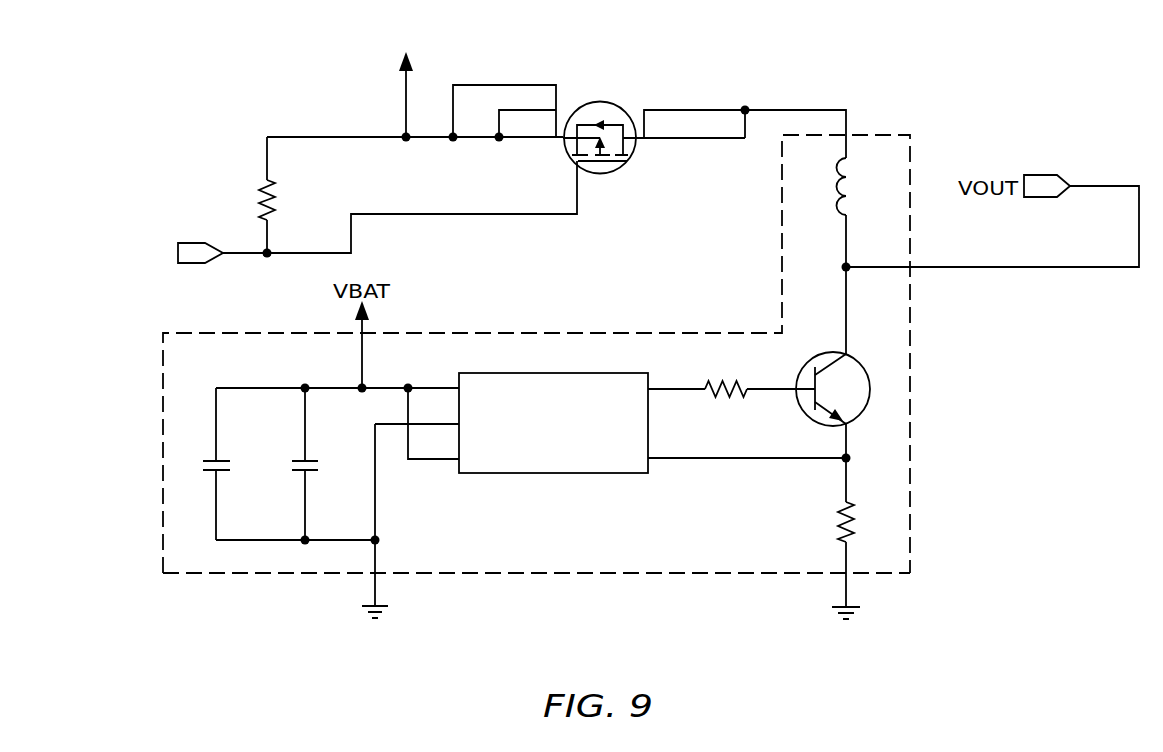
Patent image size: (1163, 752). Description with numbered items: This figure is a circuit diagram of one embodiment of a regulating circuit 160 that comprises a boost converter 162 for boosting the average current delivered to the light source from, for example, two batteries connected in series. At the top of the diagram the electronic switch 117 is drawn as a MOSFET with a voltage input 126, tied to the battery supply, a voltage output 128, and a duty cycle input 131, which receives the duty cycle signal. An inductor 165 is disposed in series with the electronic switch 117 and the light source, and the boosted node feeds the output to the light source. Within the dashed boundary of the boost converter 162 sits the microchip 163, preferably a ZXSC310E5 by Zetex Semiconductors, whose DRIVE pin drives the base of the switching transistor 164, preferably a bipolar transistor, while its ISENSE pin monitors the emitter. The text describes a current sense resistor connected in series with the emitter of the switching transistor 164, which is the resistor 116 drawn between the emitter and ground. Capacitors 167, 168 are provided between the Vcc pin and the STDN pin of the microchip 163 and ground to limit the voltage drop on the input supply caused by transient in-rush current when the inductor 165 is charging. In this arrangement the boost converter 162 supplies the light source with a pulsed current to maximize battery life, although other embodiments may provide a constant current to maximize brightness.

The voltage input 126 is at (405, 98).
The voltage output 128 is at (746, 107).
The electronic switch 117 is at (613, 172).
The duty cycle input 131 is at (197, 265).
The inductor 165 is at (836, 186).
The regulating circuit 160 is at (916, 352).
The boost converter 162 is at (527, 575).
The capacitor 168 is at (304, 460).
The capacitor 167 is at (218, 473).
The microchip 163 is at (556, 475).
The switching transistor 164 is at (859, 413).
The sense resistor 116 is at (838, 522).